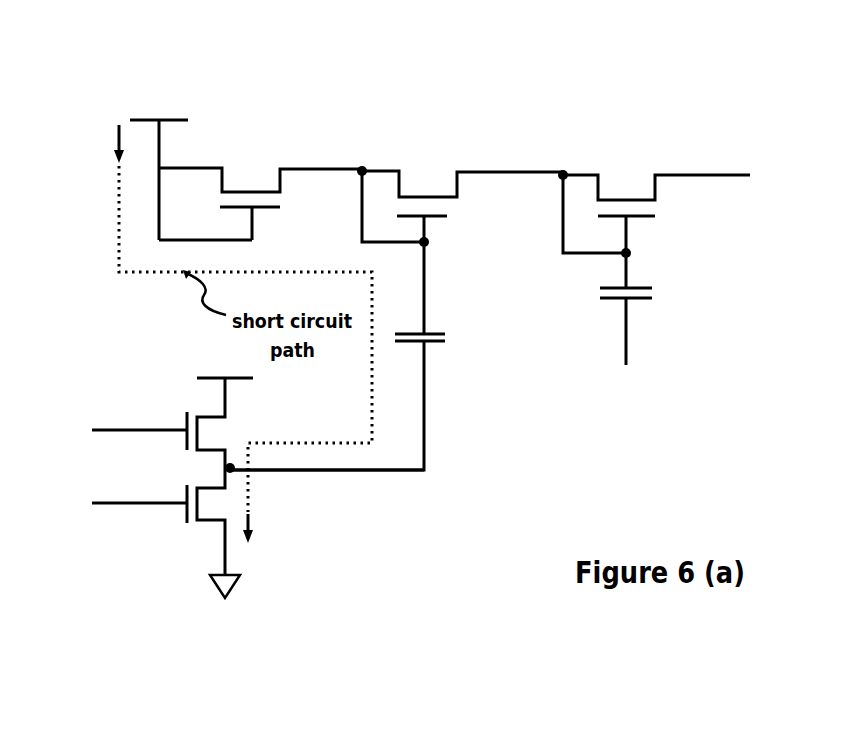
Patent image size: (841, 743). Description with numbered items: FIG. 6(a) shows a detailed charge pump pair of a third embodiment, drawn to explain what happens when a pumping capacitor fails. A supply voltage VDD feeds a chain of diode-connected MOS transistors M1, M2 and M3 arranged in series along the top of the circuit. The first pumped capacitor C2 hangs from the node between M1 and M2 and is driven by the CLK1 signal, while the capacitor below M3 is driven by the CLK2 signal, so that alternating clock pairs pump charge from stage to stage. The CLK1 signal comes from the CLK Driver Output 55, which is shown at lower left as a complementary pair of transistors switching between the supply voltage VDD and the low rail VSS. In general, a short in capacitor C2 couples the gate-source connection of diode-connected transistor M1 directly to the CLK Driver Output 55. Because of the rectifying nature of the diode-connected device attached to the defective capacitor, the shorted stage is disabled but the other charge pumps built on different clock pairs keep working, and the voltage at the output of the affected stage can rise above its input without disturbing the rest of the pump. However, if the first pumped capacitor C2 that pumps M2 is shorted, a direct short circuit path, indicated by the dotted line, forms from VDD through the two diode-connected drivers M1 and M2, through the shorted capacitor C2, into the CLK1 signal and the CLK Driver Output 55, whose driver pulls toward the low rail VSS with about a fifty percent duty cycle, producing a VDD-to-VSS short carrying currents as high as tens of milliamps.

The CLK driver output 55 is at (164, 476).
The diode-connected MOS transistor M1 is at (260, 185).
The diode-connected MOS driver M2 is at (460, 233).
The diode-connected MOS driver M3 is at (654, 212).
The first pumped capacitor C2 is at (359, 397).
The CLK1 signal CLK1 is at (397, 452).
The CLK2 signal CLK2 is at (632, 346).
The supply voltage VDD is at (159, 121).
The Vss VSS is at (221, 613).